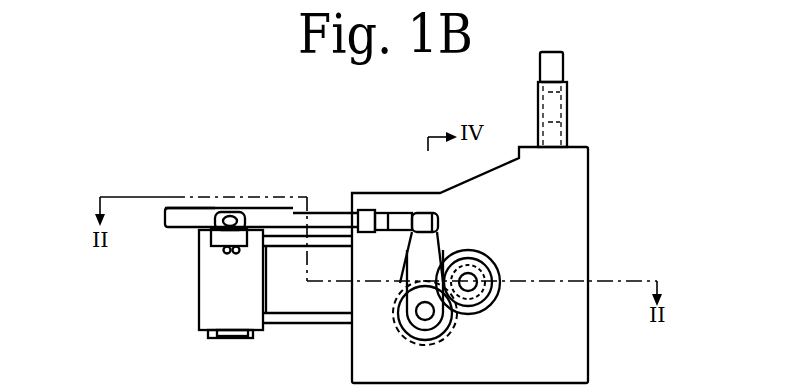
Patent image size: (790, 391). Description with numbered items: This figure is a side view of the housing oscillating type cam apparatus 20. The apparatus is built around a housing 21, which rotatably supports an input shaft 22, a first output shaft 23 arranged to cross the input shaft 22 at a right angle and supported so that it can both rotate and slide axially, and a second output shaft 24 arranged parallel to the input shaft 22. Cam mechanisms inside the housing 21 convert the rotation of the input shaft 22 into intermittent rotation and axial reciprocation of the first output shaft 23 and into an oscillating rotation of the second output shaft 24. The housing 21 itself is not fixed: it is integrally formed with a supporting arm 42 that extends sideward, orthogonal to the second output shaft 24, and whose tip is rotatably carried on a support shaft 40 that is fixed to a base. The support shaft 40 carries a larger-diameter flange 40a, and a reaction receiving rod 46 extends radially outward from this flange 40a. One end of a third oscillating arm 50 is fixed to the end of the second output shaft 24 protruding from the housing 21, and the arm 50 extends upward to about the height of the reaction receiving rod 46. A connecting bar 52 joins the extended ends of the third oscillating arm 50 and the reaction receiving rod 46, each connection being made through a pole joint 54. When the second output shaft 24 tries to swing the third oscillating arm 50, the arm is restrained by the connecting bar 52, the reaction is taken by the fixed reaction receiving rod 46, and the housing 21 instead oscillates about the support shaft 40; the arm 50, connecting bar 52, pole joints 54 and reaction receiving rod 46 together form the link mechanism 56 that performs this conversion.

The housing oscillating type cam apparatus 20 is at (452, 130).
The housing 21 is at (583, 343).
The input shaft 22 is at (470, 250).
The first output shaft 23 is at (538, 85).
The second output shaft 24 is at (425, 320).
The support shaft 40 is at (215, 228).
The flange 40a is at (207, 208).
The supporting arm 42 is at (307, 302).
The reaction receiving rod 46 is at (200, 234).
The third oscillating arm 50 is at (412, 277).
The connecting bar 52 is at (329, 212).
The pole joint 54 is at (245, 212).
The link mechanism 56 is at (323, 127).